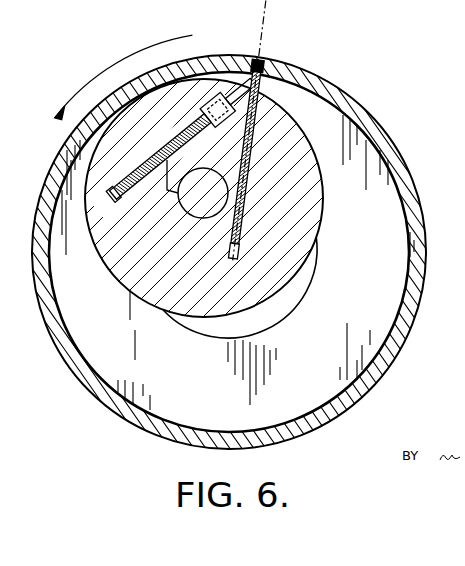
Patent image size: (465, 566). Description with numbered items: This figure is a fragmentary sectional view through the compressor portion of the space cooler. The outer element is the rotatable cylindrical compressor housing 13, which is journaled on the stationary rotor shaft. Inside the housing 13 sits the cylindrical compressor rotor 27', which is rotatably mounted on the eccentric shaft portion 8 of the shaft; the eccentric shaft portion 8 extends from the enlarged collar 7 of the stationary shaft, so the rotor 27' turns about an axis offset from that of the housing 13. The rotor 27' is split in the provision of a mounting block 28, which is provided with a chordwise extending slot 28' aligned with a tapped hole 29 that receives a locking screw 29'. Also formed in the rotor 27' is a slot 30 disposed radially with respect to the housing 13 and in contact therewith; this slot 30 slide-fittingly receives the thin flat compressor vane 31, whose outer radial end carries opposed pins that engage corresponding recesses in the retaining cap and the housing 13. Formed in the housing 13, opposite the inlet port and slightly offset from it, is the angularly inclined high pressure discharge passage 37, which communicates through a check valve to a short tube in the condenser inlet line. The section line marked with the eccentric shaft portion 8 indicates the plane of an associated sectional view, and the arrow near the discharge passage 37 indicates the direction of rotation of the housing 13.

The collar 7 is at (304, 297).
The eccentric shaft portion 8 is at (268, 19).
The compressor housing 13 is at (389, 143).
The compressor rotor 27' is at (232, 190).
The mounting block 28 is at (159, 169).
The chordwise extending slot 28' is at (237, 62).
The tapped hole 29 is at (161, 155).
The locking screw 29' is at (188, 119).
The slot 30 is at (238, 260).
The compressor vane 31 is at (240, 207).
The high pressure discharge passage 37 is at (207, 52).